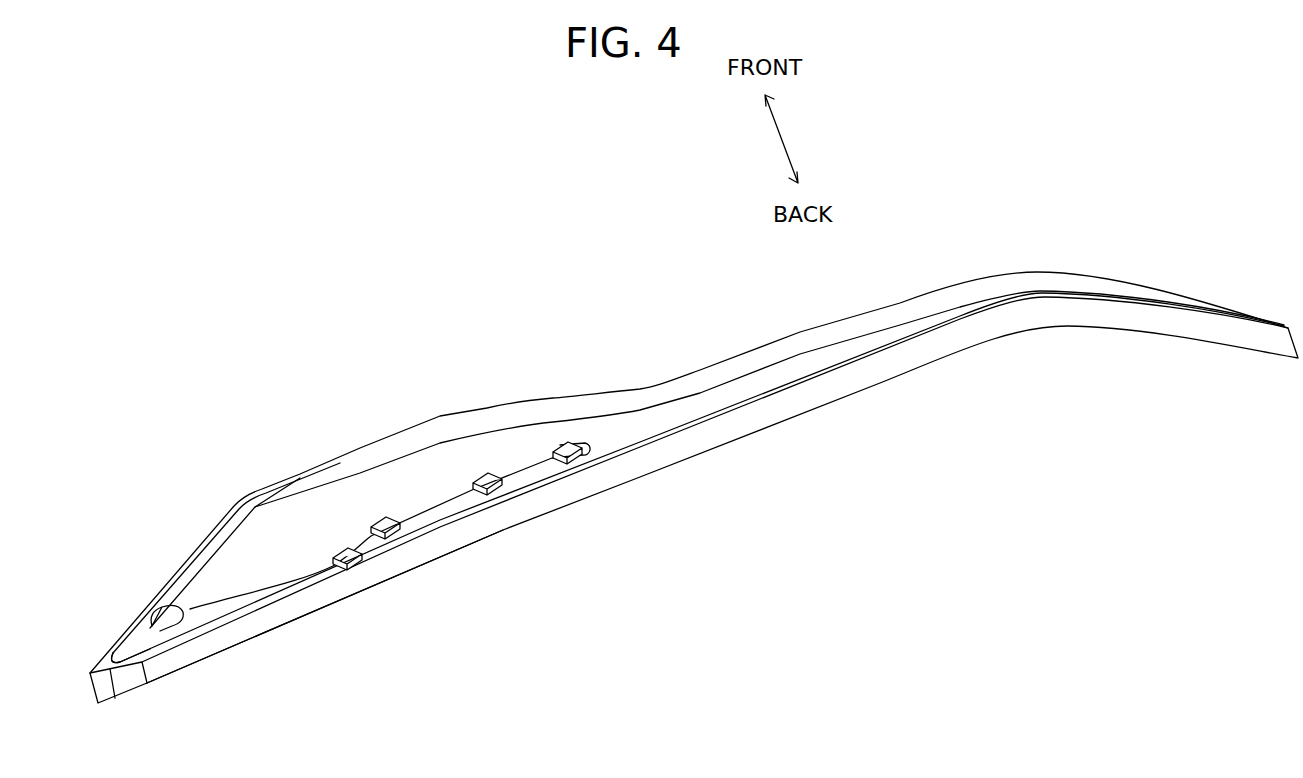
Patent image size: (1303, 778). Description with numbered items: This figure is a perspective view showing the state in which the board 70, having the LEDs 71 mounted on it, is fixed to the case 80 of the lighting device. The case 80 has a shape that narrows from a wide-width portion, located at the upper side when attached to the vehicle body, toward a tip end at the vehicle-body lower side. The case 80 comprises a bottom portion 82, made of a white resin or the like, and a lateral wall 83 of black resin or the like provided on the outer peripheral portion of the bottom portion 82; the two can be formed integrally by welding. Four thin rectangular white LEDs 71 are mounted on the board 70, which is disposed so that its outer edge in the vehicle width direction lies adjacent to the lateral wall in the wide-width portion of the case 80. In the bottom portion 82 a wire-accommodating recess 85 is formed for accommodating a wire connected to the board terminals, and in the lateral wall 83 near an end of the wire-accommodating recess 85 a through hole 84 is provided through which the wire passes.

The case 80 is at (716, 364).
The bottom portion 82 is at (268, 530).
The lateral wall 83 is at (262, 625).
The through hole 84 is at (180, 605).
The wire-accommodating recess 85 is at (130, 643).
The board 70 is at (447, 507).
The LEDs 71 is at (346, 545).